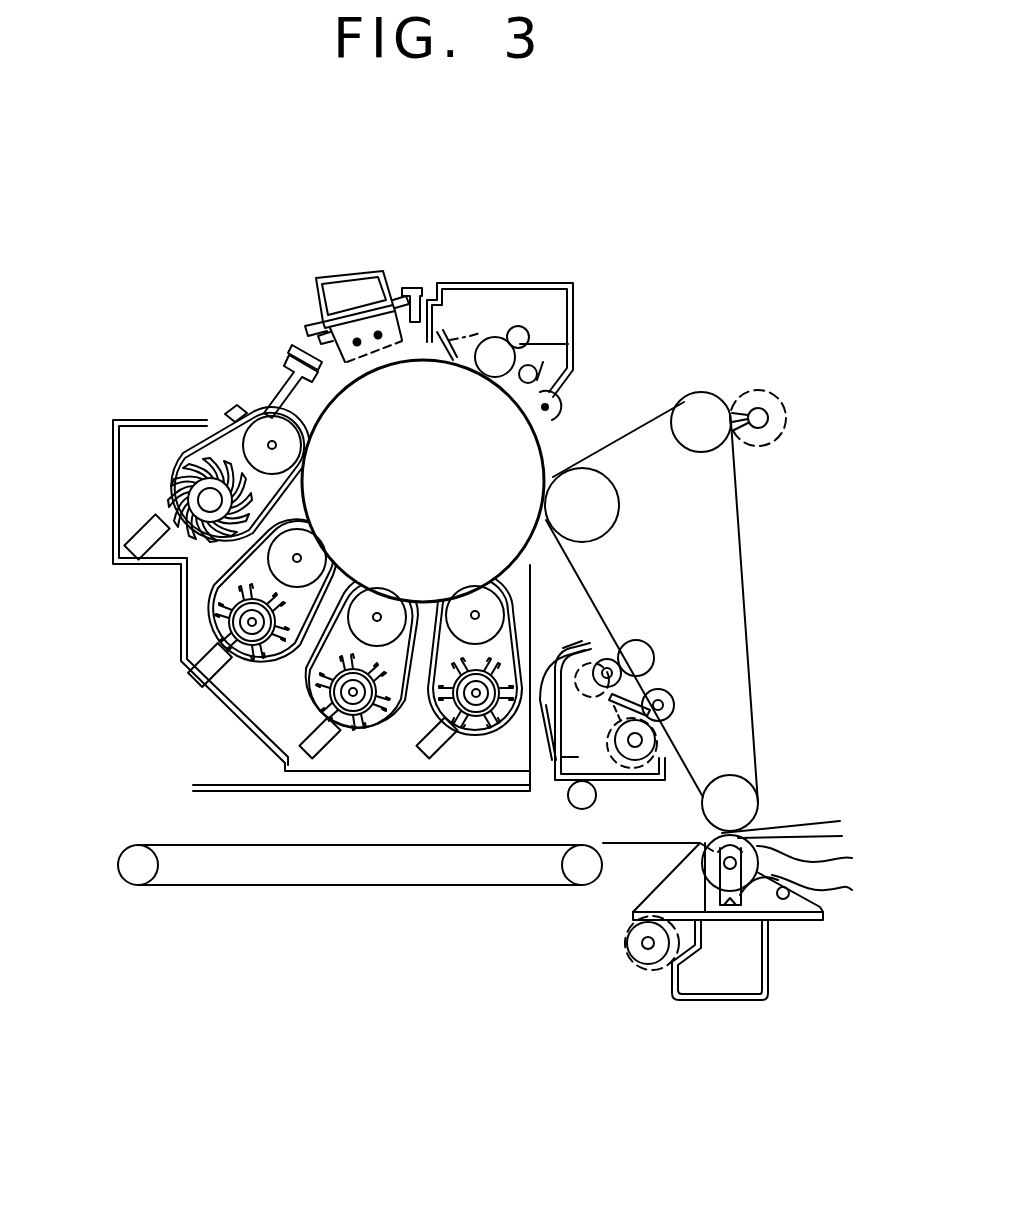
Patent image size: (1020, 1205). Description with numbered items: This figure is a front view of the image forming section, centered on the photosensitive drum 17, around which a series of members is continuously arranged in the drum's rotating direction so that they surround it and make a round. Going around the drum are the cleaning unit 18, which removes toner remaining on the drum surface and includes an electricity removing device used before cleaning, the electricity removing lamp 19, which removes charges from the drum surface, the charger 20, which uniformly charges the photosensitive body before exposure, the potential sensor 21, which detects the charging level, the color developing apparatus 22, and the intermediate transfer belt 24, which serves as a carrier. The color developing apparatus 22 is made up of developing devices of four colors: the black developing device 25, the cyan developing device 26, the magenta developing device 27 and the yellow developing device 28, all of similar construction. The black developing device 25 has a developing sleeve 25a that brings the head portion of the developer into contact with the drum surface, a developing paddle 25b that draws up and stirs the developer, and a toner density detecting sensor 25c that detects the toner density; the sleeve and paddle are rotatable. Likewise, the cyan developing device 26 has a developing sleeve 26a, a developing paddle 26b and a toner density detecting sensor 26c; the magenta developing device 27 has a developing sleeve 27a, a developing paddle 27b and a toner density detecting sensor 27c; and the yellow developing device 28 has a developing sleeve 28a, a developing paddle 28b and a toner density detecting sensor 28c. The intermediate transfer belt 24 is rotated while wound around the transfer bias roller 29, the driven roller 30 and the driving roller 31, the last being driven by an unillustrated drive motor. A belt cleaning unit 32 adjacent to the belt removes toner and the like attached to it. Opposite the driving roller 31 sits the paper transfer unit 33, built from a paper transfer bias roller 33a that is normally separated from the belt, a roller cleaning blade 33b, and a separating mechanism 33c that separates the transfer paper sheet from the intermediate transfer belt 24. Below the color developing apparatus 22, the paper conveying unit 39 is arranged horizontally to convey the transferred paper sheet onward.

The photosensitive drum 17 is at (548, 447).
The cleaning unit 18 is at (572, 286).
The electricity removing lamp 19 is at (413, 323).
The charger 20 is at (373, 355).
The potential sensor 21 is at (323, 403).
The color developing apparatus 22 is at (113, 467).
The intermediate transfer belt 24 is at (744, 528).
The black (BK) developing device 25 is at (234, 470).
The developing sleeve 25a is at (292, 445).
The developing paddle 25b is at (245, 465).
The toner density detecting sensor 25c is at (135, 545).
The cyan (C) developing device 26 is at (461, 683).
The developing sleeve 26a is at (477, 612).
The developing paddle 26b is at (478, 718).
The toner density detecting sensor 26c is at (436, 757).
The magenta (M) developing device 27 is at (336, 683).
The developing sleeve 27a is at (378, 614).
The developing paddle 27b is at (352, 718).
The toner density detecting sensor 27c is at (320, 750).
The yellow (Y) developing device 28 is at (252, 618).
The developing sleeve 28a is at (302, 556).
The developing paddle 28b is at (245, 652).
The toner density detecting sensor 28c is at (205, 680).
The transfer bias roller 29 is at (600, 500).
The driven roller 30 is at (705, 410).
The driving roller 31 is at (731, 800).
The belt cleaning unit 32 is at (612, 768).
The paper transfer unit 33 is at (733, 919).
The paper transfer bias roller 33a is at (760, 852).
The roller cleaning blade 33b is at (795, 889).
The separating mechanism 33c is at (642, 967).
The paper conveying unit 39 is at (258, 888).